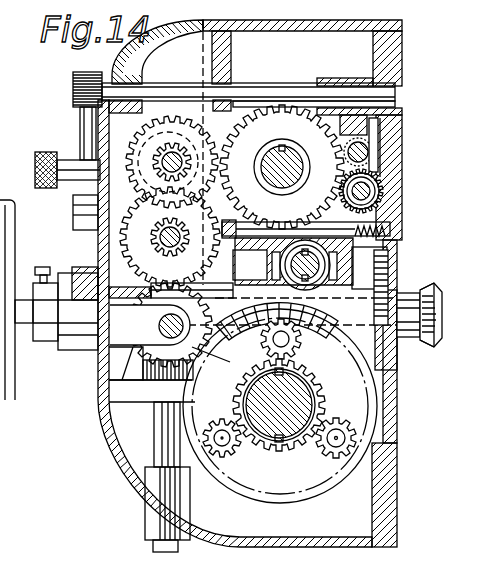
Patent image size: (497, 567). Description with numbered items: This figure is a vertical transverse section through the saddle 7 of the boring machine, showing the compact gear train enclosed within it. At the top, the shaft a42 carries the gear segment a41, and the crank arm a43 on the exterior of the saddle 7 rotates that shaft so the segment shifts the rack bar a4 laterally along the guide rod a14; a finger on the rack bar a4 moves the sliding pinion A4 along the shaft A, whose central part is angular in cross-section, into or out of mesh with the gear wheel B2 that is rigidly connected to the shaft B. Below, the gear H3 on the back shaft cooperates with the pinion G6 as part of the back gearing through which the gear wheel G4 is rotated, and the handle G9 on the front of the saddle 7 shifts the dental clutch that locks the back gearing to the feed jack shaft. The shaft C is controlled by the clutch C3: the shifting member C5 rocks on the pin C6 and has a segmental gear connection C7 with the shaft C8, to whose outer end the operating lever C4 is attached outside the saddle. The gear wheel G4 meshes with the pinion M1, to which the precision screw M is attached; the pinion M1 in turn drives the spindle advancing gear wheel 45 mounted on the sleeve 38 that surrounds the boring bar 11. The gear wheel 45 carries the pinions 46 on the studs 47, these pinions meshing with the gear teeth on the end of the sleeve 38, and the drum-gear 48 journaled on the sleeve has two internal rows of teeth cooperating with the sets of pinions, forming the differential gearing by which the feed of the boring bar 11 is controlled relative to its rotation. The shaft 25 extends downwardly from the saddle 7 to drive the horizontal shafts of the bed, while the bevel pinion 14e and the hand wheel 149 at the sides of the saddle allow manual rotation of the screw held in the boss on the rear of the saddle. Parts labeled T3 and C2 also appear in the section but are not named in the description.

The saddle 7 is at (118, 76).
The shaft a42 is at (262, 99).
The gear segment a41 is at (356, 120).
The crank arm a43 is at (92, 128).
The guide rod a14 is at (368, 147).
The rack bar a4 is at (379, 171).
The shaft A is at (386, 192).
The sliding pinion A4 is at (383, 212).
The gear wheel B2 is at (282, 167).
The shaft B is at (293, 168).
The gear H3 is at (172, 167).
The gear wheel G4 is at (170, 237).
The pinion G6 is at (162, 248).
The handle G9 is at (82, 218).
The operating lever C4 is at (84, 282).
The hand wheel 149 is at (6, 388).
The shaft C8 is at (171, 277).
The precision screw M is at (161, 325).
The bracket T3 is at (142, 402).
The shaft 25 is at (162, 421).
The pin C6 is at (304, 230).
The shaft C is at (300, 262).
The segmental gear connection C7 is at (281, 275).
The clutch C3 is at (322, 276).
The bearing ring C2 is at (330, 270).
The shifting member C5 is at (368, 286).
The drum-gear 48 is at (288, 320).
The studs 47 is at (275, 339).
The pinion M1 is at (198, 340).
The spindle advancing gear wheel 45 is at (264, 405).
The boring bar 11 is at (316, 400).
The pinions 46 is at (300, 347).
The sleeve 38 is at (332, 404).
The bevel pinion 14e is at (424, 348).